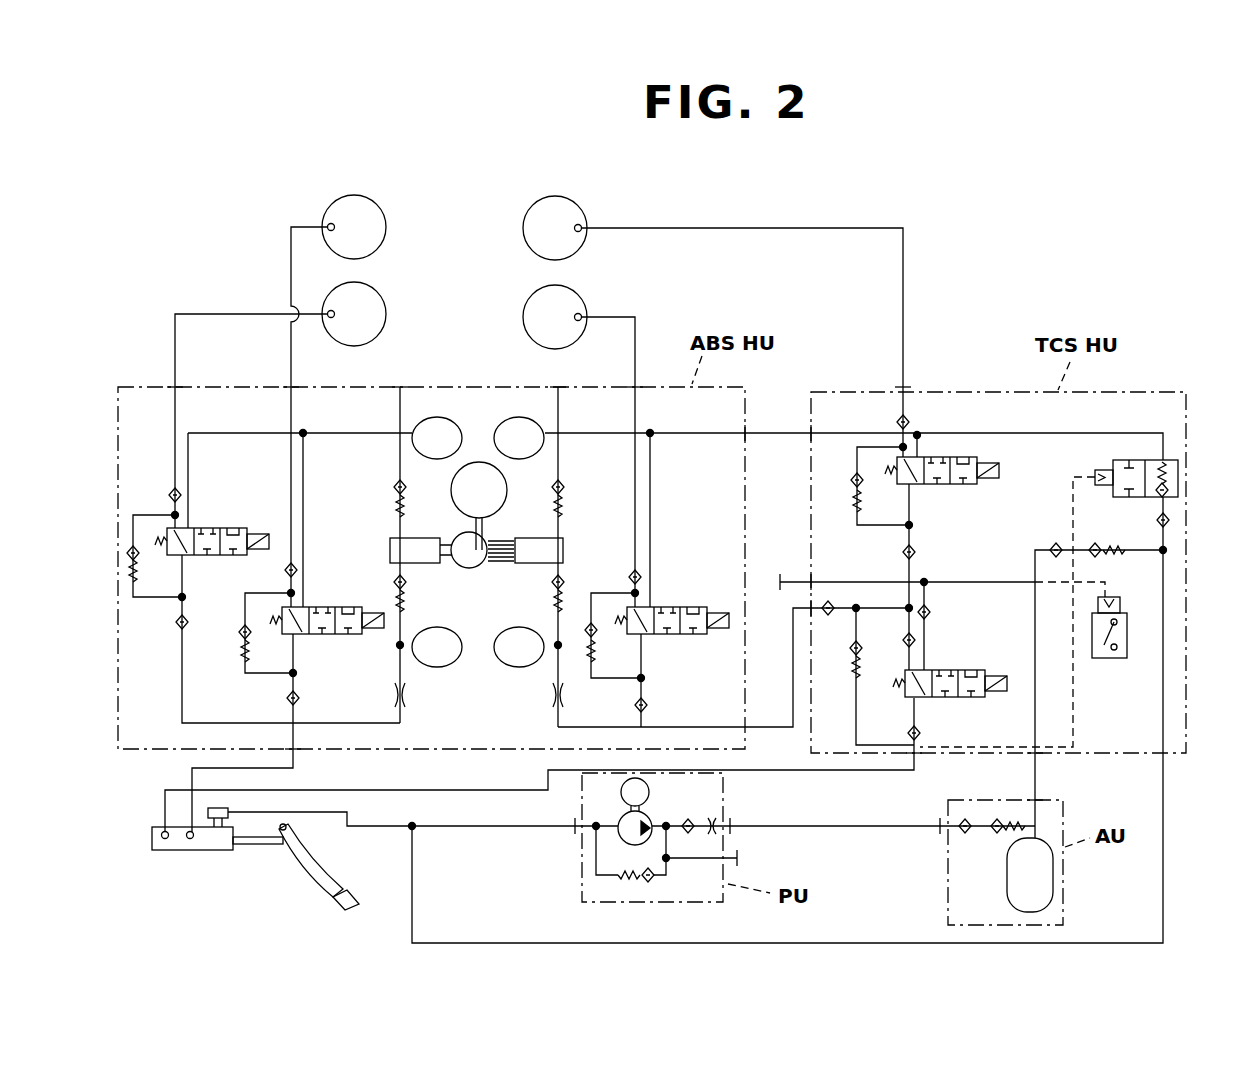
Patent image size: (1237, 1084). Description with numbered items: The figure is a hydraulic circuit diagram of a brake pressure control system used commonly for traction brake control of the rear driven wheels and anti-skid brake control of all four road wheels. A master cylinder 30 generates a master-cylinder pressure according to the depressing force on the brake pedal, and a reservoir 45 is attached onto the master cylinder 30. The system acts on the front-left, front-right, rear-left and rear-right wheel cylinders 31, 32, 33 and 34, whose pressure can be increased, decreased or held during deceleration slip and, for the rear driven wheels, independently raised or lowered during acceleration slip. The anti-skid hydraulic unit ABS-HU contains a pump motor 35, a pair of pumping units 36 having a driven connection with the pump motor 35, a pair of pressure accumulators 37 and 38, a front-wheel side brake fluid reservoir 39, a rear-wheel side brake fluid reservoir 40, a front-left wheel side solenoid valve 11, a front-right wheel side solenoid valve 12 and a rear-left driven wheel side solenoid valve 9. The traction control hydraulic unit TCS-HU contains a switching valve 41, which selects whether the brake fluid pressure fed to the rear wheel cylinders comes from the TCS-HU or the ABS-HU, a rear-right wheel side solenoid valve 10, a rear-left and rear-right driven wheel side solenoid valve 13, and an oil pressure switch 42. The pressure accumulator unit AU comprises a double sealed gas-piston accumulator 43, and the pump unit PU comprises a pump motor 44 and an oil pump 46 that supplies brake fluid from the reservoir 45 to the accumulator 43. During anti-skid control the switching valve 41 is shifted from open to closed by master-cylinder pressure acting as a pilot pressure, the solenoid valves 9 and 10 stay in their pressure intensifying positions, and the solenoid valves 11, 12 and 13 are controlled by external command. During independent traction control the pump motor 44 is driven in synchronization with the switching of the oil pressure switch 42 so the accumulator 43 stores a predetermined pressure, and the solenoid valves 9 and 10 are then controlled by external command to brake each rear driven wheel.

The rear-left driven wheel side solenoid valve 9 is at (670, 606).
The rear-right wheel side solenoid valve 10 is at (957, 485).
The front-left wheel side solenoid valve 11 is at (214, 527).
The front-right wheel side solenoid valve 12 is at (337, 606).
The rear-left and rear-right driven wheel side solenoid valve 13 is at (966, 670).
The master cylinder 30 is at (192, 852).
The front-left wheel cylinder 31 is at (386, 308).
The front-right wheel cylinder 32 is at (386, 222).
The rear-left wheel cylinder 33 is at (526, 310).
The rear-right wheel cylinder 34 is at (526, 222).
The pump motor 35 is at (479, 462).
The pumping units 36 is at (518, 563).
The pressure accumulator 37 is at (437, 668).
The pressure accumulator 38 is at (519, 668).
The front-wheel side brake fluid reservoir 39 is at (437, 417).
The rear-wheel side brake fluid reservoir 40 is at (518, 417).
The switching valve 41 is at (1113, 463).
The oil pressure switch 42 is at (1110, 659).
The double sealed gas-piston accumulator 43 is at (1053, 878).
The pump motor 44 is at (650, 792).
The reservoir 45 is at (215, 808).
The oil pump 46 is at (622, 840).